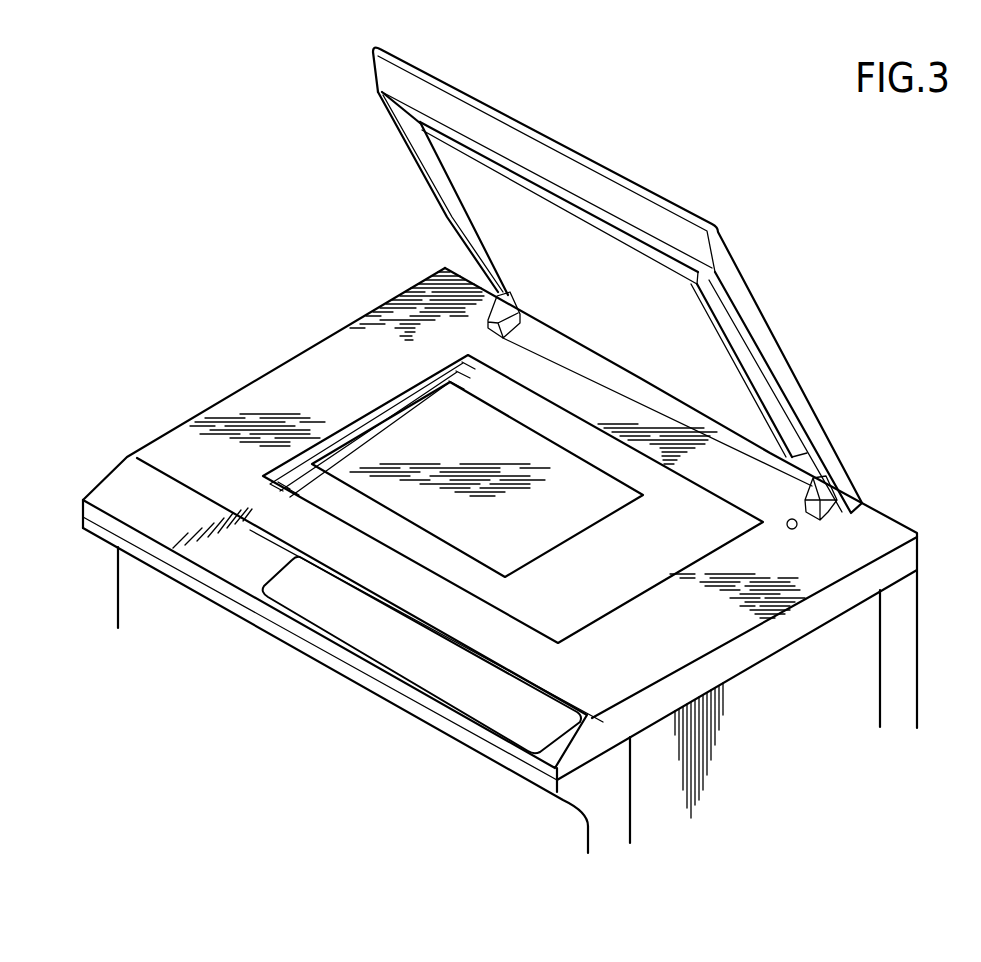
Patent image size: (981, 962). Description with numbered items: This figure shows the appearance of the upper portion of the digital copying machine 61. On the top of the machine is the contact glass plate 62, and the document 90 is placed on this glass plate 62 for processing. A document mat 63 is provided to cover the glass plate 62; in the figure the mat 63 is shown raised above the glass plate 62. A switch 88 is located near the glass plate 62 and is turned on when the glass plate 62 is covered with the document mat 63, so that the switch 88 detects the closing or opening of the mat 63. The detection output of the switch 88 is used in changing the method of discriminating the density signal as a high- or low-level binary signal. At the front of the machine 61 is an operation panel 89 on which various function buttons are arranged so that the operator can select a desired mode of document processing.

The digital copying machine 61 is at (212, 393).
The glass plate 62 is at (622, 583).
The document mat 63 is at (707, 333).
The switch 88 is at (792, 529).
The operation panel 89 is at (350, 634).
The document 90 is at (533, 525).